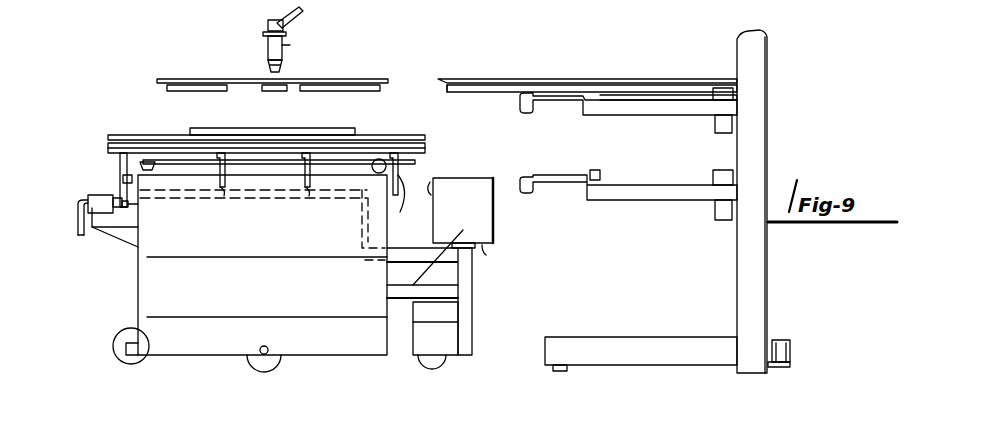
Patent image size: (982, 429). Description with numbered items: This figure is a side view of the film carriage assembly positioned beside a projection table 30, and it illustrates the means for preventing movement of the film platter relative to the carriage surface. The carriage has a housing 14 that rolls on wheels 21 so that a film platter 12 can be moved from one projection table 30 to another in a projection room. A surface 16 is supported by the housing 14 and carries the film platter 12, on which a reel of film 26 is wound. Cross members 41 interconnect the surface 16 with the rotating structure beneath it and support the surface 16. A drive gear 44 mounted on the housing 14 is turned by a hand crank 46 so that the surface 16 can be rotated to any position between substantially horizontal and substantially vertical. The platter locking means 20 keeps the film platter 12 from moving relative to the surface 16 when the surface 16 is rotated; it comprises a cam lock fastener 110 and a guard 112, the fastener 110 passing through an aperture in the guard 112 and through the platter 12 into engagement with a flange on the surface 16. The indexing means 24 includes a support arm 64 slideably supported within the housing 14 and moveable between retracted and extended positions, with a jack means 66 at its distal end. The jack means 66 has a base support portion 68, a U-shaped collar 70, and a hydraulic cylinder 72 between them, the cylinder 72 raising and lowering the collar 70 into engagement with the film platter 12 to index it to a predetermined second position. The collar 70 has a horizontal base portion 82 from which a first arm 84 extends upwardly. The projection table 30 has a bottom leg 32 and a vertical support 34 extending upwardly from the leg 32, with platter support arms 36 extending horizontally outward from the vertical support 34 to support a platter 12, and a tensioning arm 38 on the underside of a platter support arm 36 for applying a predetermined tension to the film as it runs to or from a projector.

The film platter 12 is at (385, 135).
The housing 14 is at (137, 277).
The surface 16 is at (110, 150).
The platter locking means 20 is at (262, 46).
The wheels 21 is at (133, 366).
The indexing means 24 is at (520, 297).
The reel of film 26 is at (323, 128).
The projection table 30 is at (768, 87).
The bottom leg 32 is at (645, 367).
The vertical support 34 is at (767, 300).
The platter support arm 36 is at (650, 202).
The tensioning arm 38 is at (555, 175).
The cross members 41 is at (224, 190).
The drive gear 44 is at (127, 222).
The hand crank 46 is at (77, 220).
The support arm 64 is at (388, 285).
The jack means 66 is at (463, 322).
The base support portion 68 is at (412, 332).
The U-shaped collar 70 is at (495, 219).
The hydraulic cylinder 72 is at (443, 247).
The horizontal base portion 82 is at (482, 245).
The first arm 84 is at (430, 186).
The cam lock fastener 110 is at (290, 45).
The guard 112 is at (343, 78).